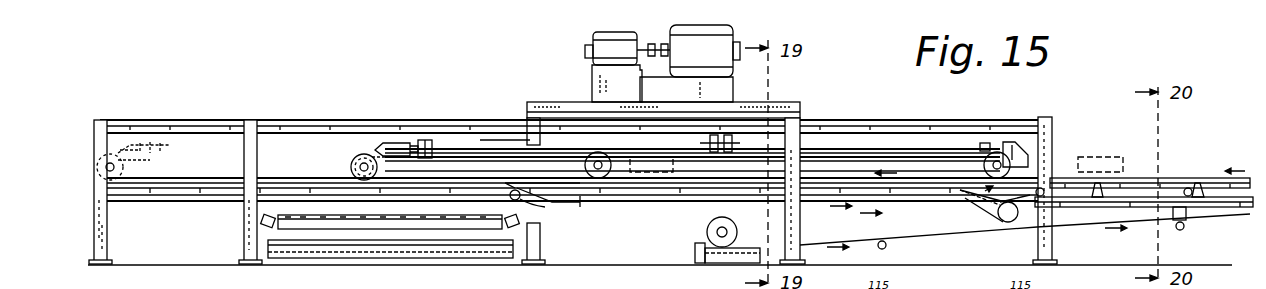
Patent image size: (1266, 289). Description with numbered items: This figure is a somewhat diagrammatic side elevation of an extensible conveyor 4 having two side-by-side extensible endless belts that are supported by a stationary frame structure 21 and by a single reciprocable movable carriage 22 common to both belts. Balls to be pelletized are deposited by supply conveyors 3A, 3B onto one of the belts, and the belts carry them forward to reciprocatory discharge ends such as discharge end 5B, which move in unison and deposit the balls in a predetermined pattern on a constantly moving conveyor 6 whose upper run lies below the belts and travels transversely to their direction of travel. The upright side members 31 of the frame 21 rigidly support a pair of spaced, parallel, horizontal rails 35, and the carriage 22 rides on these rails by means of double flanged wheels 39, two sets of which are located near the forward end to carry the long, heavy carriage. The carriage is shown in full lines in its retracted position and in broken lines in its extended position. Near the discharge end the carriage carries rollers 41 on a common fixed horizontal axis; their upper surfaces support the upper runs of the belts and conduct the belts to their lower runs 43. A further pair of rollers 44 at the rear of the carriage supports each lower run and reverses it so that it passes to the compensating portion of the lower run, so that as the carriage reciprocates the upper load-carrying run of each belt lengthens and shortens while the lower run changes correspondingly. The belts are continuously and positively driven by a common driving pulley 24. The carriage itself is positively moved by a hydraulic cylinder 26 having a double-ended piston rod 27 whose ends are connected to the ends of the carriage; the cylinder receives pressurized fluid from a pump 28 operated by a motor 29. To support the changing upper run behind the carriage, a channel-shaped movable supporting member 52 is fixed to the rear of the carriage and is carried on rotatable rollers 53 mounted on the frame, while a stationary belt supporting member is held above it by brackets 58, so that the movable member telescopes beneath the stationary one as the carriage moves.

The supply conveyor 3A is at (673, 162).
The supply conveyor 3B is at (1108, 155).
The extensible conveyor 4 is at (517, 104).
The reciprocatory discharge end 5B is at (505, 205).
The constantly moving conveyor 6 is at (316, 208).
The stationary frame structure 21 is at (858, 118).
The reciprocable movable carriage 22 is at (572, 210).
The common driving pulley 24 is at (710, 230).
The hydraulic cylinder 26 is at (487, 140).
The double-ended piston rod 27 is at (853, 148).
The pump 28 is at (600, 41).
The motor 29 is at (728, 38).
The upright side members 31 is at (107, 222).
The rails 35 is at (221, 178).
The double flanged wheels 39 is at (124, 165).
The rollers 41 is at (545, 226).
The lower runs 43 is at (928, 237).
The rollers 44 is at (975, 211).
The movable supporting member 52 is at (1138, 178).
The rotatable rollers 53 is at (1042, 188).
The brackets 58 is at (1203, 185).